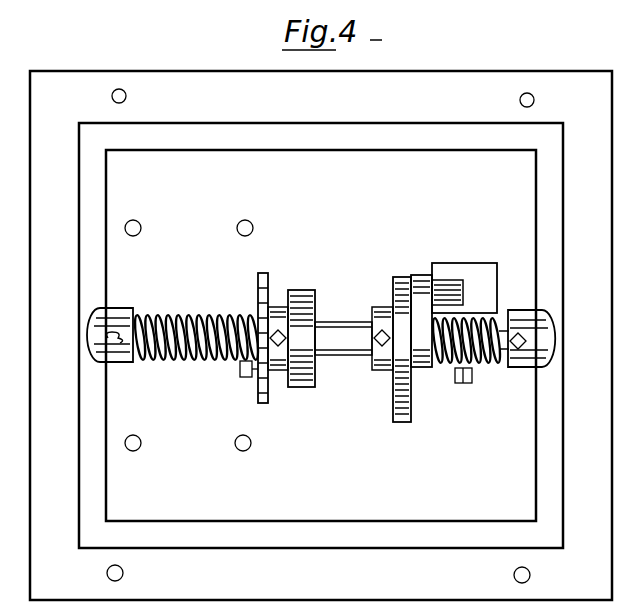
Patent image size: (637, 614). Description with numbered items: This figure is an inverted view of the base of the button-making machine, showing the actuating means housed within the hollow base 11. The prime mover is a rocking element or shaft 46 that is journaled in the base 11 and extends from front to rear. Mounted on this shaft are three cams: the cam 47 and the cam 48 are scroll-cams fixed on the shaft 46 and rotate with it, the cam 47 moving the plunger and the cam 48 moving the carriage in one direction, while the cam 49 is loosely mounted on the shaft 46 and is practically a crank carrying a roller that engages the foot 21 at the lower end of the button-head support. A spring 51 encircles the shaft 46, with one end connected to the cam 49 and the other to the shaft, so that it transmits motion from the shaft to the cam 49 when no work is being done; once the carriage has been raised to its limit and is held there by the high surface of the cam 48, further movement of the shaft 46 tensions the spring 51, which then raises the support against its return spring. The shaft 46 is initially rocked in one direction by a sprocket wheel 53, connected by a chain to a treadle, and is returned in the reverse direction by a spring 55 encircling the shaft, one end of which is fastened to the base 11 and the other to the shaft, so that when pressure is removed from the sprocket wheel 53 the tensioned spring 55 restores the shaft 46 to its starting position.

The hollow base 11 is at (165, 142).
The foot 21 is at (480, 252).
The rocking element or shaft 46 is at (358, 304).
The cam 47 is at (315, 381).
The cam 48 is at (411, 421).
The cam 49 is at (417, 368).
The spring 51 is at (475, 361).
The sprocket wheel 53 is at (258, 396).
The spring 55 is at (192, 356).